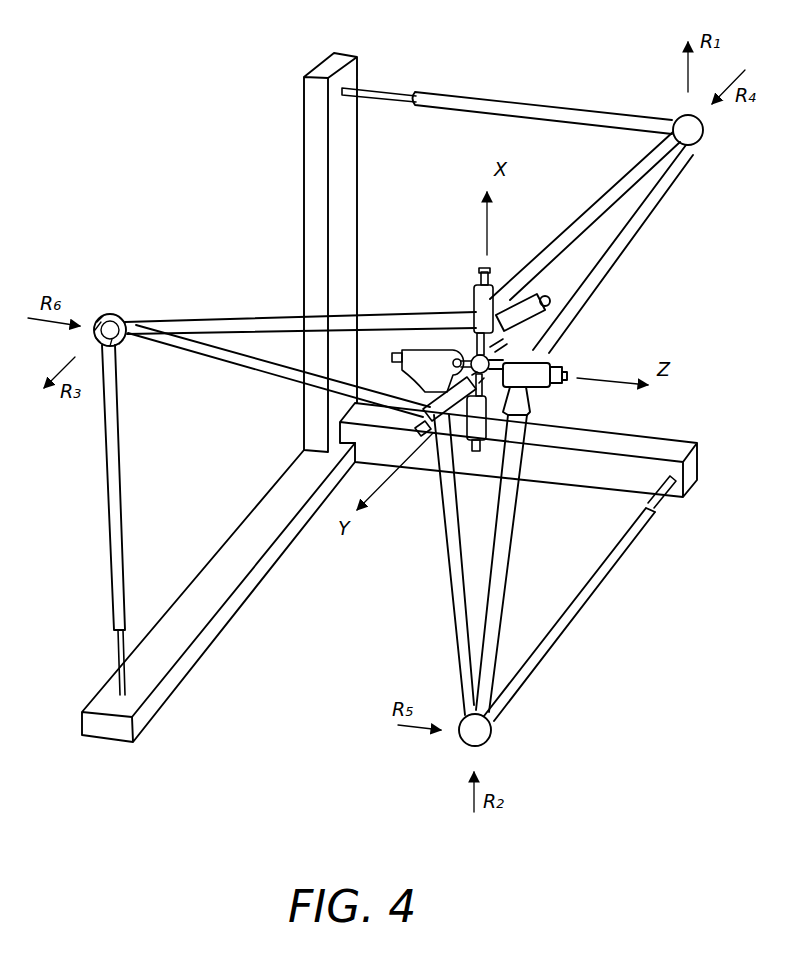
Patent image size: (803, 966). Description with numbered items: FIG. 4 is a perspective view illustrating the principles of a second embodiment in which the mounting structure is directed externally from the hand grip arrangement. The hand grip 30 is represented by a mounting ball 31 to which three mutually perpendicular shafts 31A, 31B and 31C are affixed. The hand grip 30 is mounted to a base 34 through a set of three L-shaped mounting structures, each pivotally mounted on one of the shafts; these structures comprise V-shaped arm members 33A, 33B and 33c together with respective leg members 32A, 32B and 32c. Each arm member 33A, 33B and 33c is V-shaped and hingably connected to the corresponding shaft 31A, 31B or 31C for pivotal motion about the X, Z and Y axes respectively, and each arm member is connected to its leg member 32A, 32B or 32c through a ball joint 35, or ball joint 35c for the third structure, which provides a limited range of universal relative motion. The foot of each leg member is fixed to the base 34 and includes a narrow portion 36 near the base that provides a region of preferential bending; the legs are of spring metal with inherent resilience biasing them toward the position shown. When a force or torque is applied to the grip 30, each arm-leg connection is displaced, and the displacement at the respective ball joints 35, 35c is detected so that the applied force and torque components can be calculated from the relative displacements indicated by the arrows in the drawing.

The hand grip 30 is at (535, 342).
The mounting ball 31 is at (468, 355).
The shaft 31A is at (490, 280).
The shaft 31B is at (390, 350).
The shaft 31C is at (426, 430).
The leg member 32A is at (500, 100).
The leg member 32B is at (548, 688).
The leg member 32c is at (108, 466).
The V-shaped arm member 33A is at (620, 248).
The V-shaped arm member 33B is at (500, 560).
The V-shaped arm member 33c is at (180, 322).
The base 34 is at (205, 673).
The ball joint 35 is at (703, 138).
The ball joint 35c is at (112, 320).
The narrow portion 36 is at (378, 90).